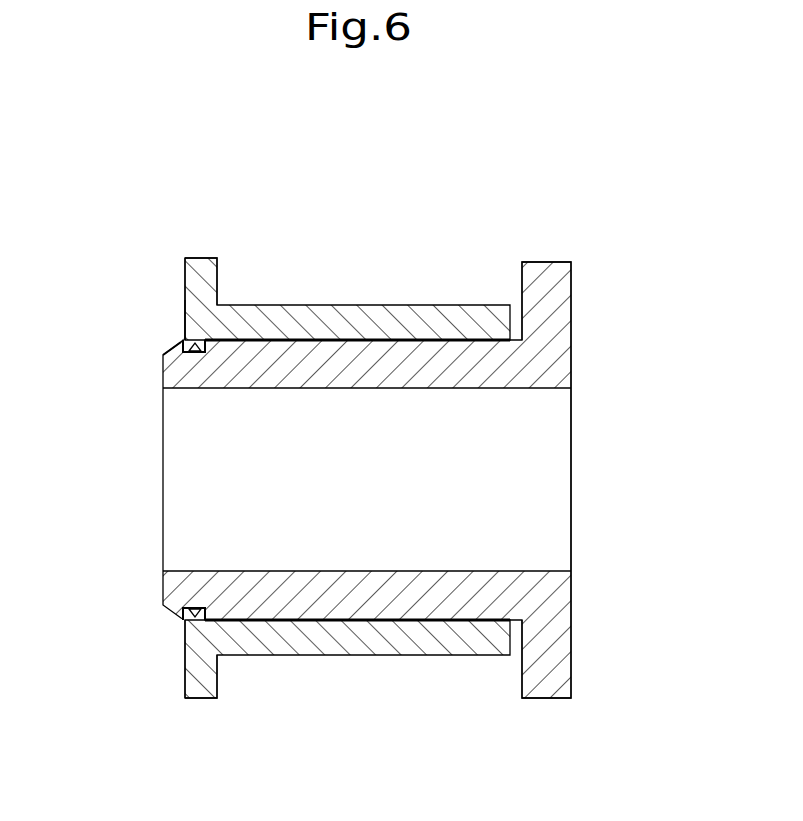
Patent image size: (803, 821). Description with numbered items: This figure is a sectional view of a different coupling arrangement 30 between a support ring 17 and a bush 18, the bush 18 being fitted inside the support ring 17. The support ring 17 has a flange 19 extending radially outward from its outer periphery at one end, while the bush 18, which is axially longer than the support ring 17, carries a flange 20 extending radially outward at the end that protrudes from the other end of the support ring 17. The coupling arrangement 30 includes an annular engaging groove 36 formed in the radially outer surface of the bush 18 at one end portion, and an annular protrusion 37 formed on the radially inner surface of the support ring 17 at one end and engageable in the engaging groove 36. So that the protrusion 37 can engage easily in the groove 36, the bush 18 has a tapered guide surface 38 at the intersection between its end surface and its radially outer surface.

The support ring 17 is at (338, 306).
The bush 18 is at (163, 384).
The flange 19 is at (204, 258).
The flange 20 is at (558, 283).
The coupling arrangement 30 is at (178, 333).
The annular engaging groove 36 is at (199, 351).
The annular protrusion 37 is at (196, 611).
The tapered guide surface 38 is at (170, 347).